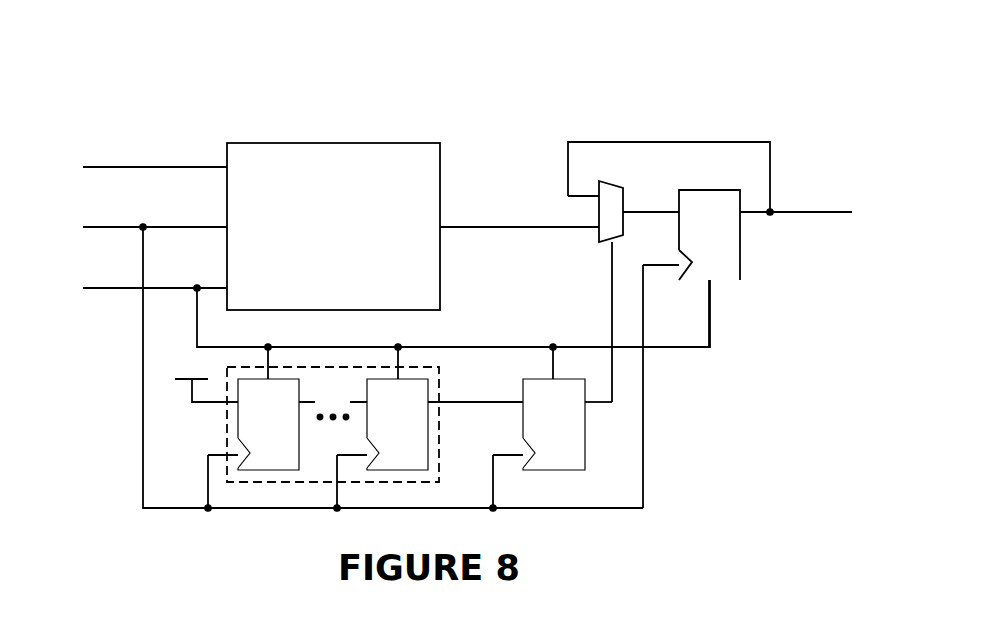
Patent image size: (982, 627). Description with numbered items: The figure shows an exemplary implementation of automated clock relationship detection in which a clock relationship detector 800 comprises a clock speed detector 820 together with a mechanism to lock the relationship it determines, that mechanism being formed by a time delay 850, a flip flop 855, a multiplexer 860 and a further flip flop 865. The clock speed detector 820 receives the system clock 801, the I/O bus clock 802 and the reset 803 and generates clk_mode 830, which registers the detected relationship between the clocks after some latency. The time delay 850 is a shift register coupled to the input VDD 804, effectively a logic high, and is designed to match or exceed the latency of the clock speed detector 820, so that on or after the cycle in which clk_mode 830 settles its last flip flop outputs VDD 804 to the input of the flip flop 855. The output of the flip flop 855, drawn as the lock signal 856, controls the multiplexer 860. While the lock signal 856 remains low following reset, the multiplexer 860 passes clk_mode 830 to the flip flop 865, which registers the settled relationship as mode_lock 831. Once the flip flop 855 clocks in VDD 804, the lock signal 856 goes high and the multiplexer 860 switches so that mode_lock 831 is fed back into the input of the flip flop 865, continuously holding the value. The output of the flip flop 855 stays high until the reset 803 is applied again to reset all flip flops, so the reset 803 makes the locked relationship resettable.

The clock relationship detector 800 is at (471, 90).
The system clock 801 is at (83, 161).
The I/O bus clock 802 is at (83, 222).
The reset 803 is at (83, 283).
The VDD 804 is at (191, 390).
The clock speed detector 820 is at (350, 261).
The clk_mode 830 is at (495, 228).
The mode_lock 831 is at (803, 210).
The time delay 850 is at (352, 393).
The flip flop 855 is at (572, 423).
The lock signal 856 is at (611, 328).
The multiplexer 860 is at (615, 181).
The flip flop 865 is at (727, 240).